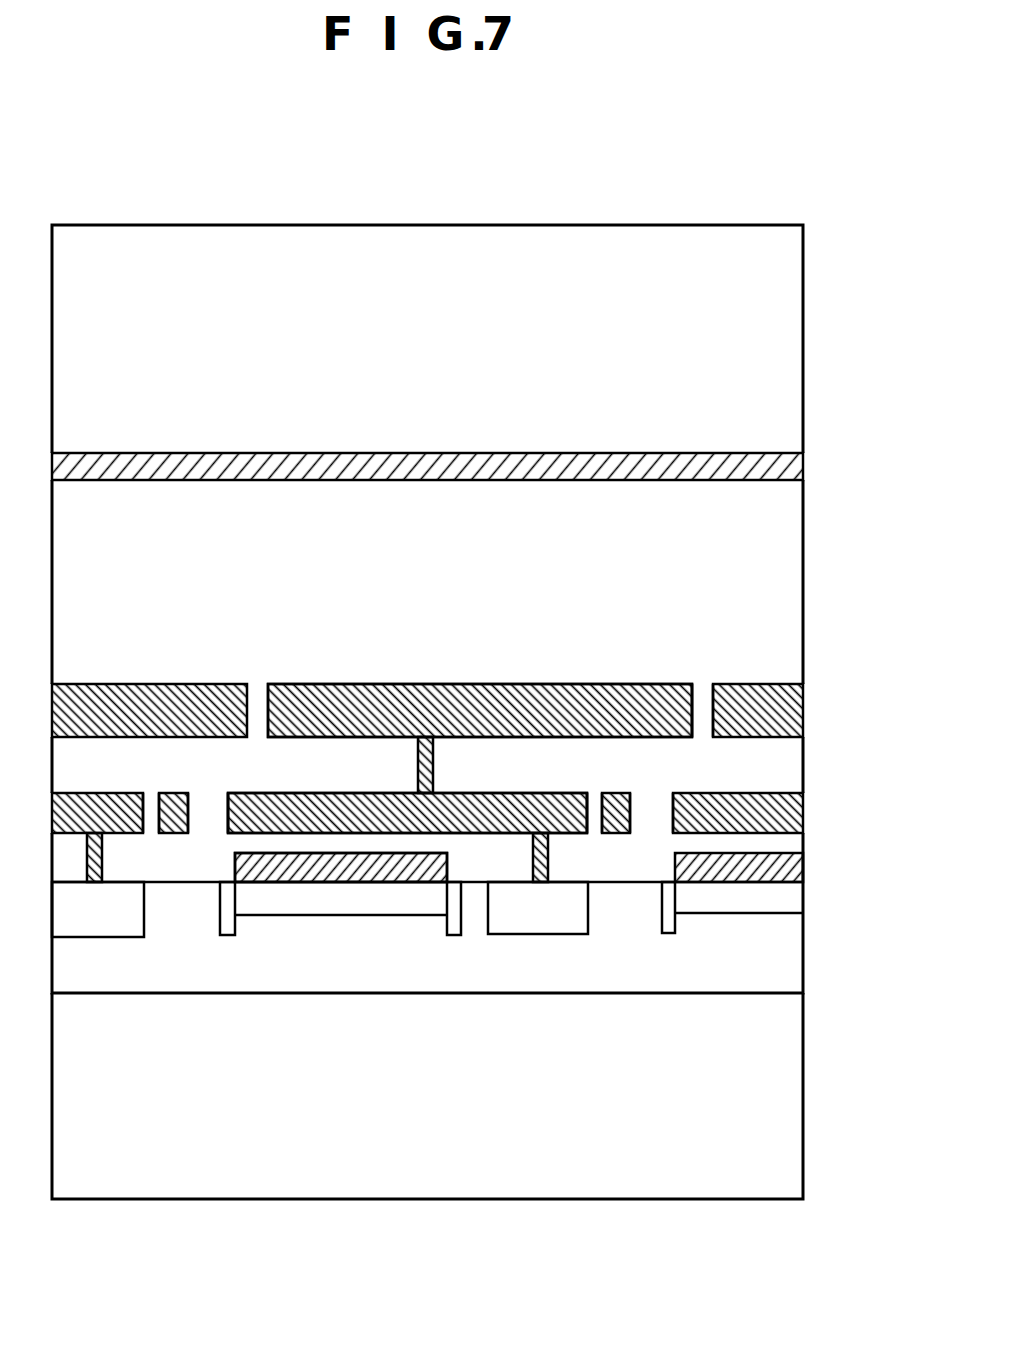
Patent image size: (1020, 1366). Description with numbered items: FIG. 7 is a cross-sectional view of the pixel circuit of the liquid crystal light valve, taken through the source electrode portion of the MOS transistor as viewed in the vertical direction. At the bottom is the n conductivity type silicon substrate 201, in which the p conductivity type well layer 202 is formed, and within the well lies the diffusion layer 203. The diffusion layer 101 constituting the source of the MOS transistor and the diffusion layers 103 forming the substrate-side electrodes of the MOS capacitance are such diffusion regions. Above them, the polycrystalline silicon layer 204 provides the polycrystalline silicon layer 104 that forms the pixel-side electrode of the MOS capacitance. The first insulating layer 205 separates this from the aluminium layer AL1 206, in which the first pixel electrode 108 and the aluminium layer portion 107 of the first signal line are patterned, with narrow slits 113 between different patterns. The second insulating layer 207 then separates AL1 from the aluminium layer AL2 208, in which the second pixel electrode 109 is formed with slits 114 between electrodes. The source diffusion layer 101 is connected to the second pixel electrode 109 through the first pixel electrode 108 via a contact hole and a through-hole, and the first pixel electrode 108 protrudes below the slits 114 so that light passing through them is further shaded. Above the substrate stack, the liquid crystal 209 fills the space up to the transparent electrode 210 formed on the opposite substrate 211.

The diffusion layer 101 is at (548, 927).
The diffusion layer of MOS capacitance 103 is at (387, 910).
The polycrystalline silicon layer of MOS capacitance 104 is at (432, 853).
The aluminium layer portion of first signal line 107 is at (172, 790).
The first pixel electrode 108 is at (340, 790).
The second pixel electrode 109 is at (488, 680).
The slit 113 is at (653, 800).
The slit 114 is at (702, 690).
The n conductivity type silicon substrate 201 is at (803, 1076).
The p conductivity type well layer 202 is at (803, 957).
The diffusion layer 203 is at (803, 896).
The polycrystalline silicon layer 204 is at (803, 864).
The first insulating layer 205 is at (803, 828).
The aluminium layer AL1 206 is at (803, 797).
The second insulating layer 207 is at (803, 757).
The aluminium layer AL2 208 is at (803, 707).
The liquid crystal 209 is at (803, 561).
The transparent electrode 210 is at (803, 462).
The opposite substrate 211 is at (803, 352).